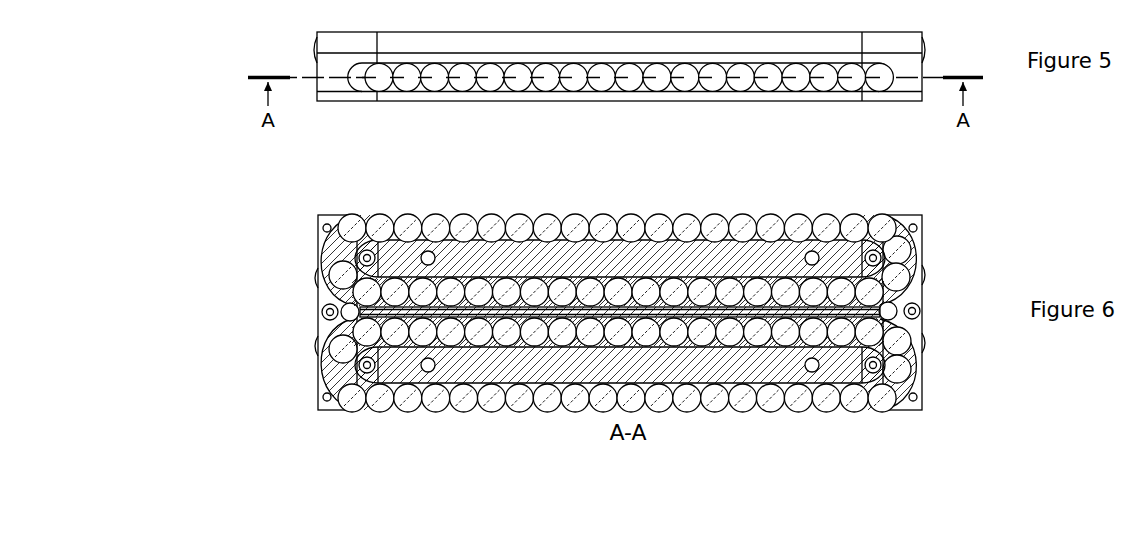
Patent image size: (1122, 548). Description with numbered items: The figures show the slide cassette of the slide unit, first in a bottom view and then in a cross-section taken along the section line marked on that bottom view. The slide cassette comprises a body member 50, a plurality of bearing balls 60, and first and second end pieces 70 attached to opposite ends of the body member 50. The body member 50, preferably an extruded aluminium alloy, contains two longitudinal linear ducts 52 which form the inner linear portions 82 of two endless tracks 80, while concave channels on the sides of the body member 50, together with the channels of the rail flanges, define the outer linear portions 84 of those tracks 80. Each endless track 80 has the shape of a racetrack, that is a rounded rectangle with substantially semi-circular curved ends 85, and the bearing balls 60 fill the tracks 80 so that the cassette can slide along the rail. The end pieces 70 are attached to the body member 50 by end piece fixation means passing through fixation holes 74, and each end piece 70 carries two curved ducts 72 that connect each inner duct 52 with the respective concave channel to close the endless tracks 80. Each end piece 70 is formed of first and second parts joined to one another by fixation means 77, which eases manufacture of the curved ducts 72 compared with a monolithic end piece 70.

In FIG. 6, the body member 50 is at (837, 371).
In FIG. 6, the longitudinal linear duct 52 is at (772, 348).
In FIG. 5, the bearing ball 60 is at (687, 93).
In FIG. 6, the bearing ball 60 is at (716, 224).
In FIG. 5, the end piece 70 is at (908, 72).
In FIG. 6, the end piece 70 is at (330, 297).
In FIG. 6, the curved duct 72 is at (908, 265).
In FIG. 5, the fixation hole 74 is at (313, 50).
In FIG. 6, the fixation hole 74 is at (928, 343).
In FIG. 6, the fixation means 77 is at (876, 368).
In FIG. 6, the endless track 80 is at (465, 410).
In FIG. 6, the inner linear portion 82 is at (546, 279).
In FIG. 6, the outer linear portion 84 is at (618, 225).
In FIG. 6, the curved end 85 is at (340, 252).